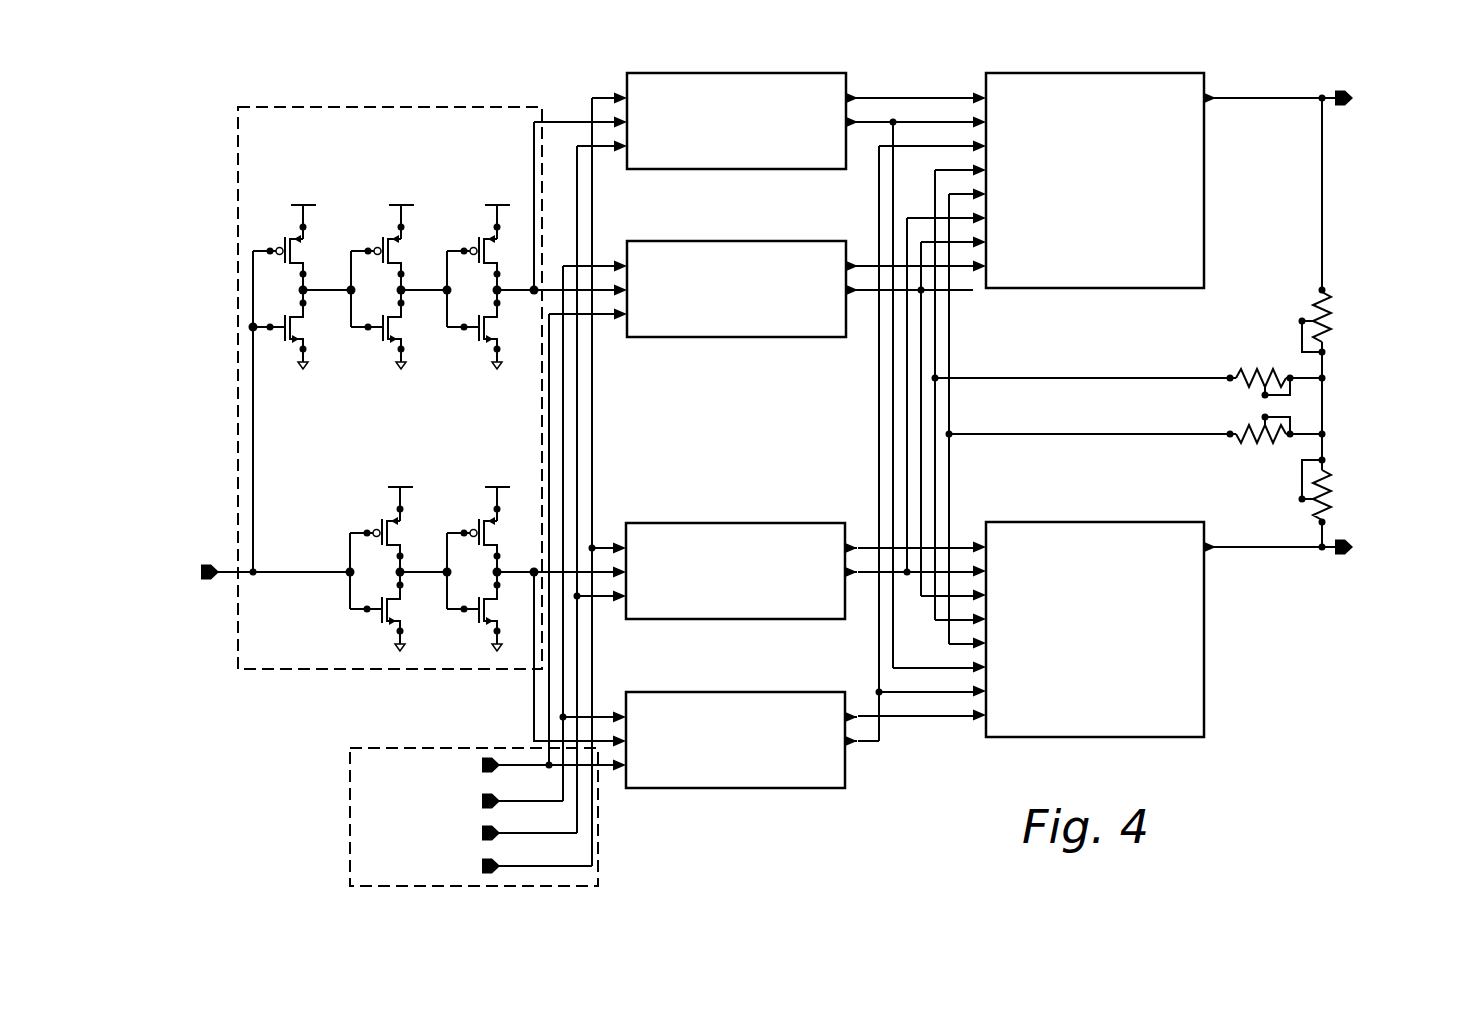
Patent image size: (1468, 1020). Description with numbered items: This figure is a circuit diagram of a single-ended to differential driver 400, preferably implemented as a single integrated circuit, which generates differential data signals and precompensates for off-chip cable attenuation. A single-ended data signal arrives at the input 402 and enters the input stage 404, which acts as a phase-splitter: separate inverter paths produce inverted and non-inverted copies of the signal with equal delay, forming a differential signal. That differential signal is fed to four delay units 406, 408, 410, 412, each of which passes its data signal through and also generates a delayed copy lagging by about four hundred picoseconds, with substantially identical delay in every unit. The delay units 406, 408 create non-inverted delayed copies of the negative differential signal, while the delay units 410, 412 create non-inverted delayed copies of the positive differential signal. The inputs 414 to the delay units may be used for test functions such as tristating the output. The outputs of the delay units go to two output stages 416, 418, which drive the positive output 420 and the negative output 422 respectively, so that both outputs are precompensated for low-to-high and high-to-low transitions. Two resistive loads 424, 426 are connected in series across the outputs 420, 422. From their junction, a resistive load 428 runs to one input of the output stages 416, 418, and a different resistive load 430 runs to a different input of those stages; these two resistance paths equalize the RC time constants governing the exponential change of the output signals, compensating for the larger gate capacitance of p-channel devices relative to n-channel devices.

The driver 400 is at (1362, 728).
The input 402 is at (211, 582).
The input stage 404 is at (238, 132).
The delay unit 406 is at (683, 170).
The delay unit 408 is at (683, 338).
The delay unit 410 is at (682, 620).
The delay unit 412 is at (682, 788).
The inputs 414 is at (350, 775).
The output stage 416 is at (1032, 73).
The output stage 418 is at (1030, 523).
The positive output 420 is at (1345, 106).
The negative output 422 is at (1345, 556).
The resistive load 424 is at (1333, 306).
The resistive load 426 is at (1333, 483).
The resistive load 428 is at (1233, 356).
The resistive load 430 is at (1237, 450).